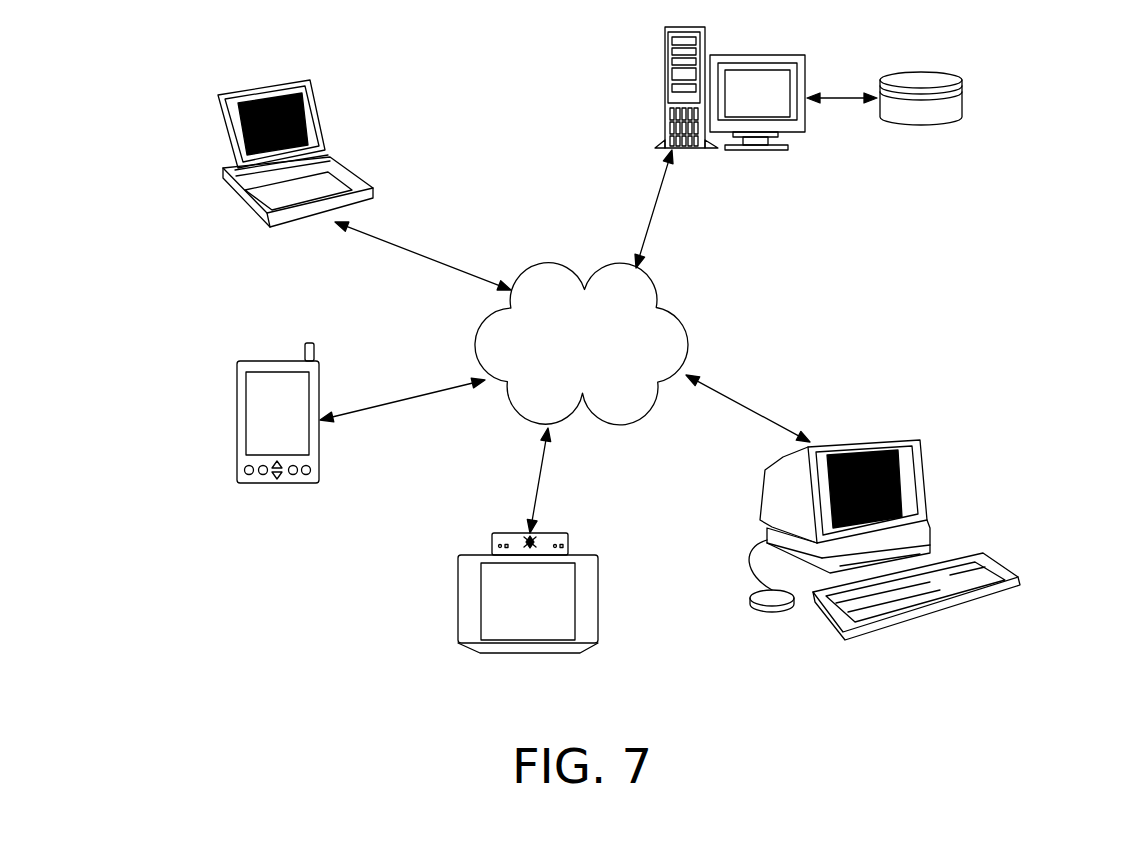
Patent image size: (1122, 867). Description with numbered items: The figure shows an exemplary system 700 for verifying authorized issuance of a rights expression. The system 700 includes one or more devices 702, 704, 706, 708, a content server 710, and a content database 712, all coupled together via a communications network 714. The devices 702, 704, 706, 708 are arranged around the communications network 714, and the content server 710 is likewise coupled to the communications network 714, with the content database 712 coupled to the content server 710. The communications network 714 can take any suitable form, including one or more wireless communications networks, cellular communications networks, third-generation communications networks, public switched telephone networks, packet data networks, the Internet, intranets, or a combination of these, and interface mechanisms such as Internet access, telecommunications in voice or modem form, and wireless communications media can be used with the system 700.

The system 700 is at (1105, 756).
The device 702 is at (325, 118).
The device 704 is at (319, 373).
The device 706 is at (568, 544).
The device 708 is at (927, 468).
The content server 710 is at (665, 88).
The content database 712 is at (940, 121).
The communications network 714 is at (563, 356).